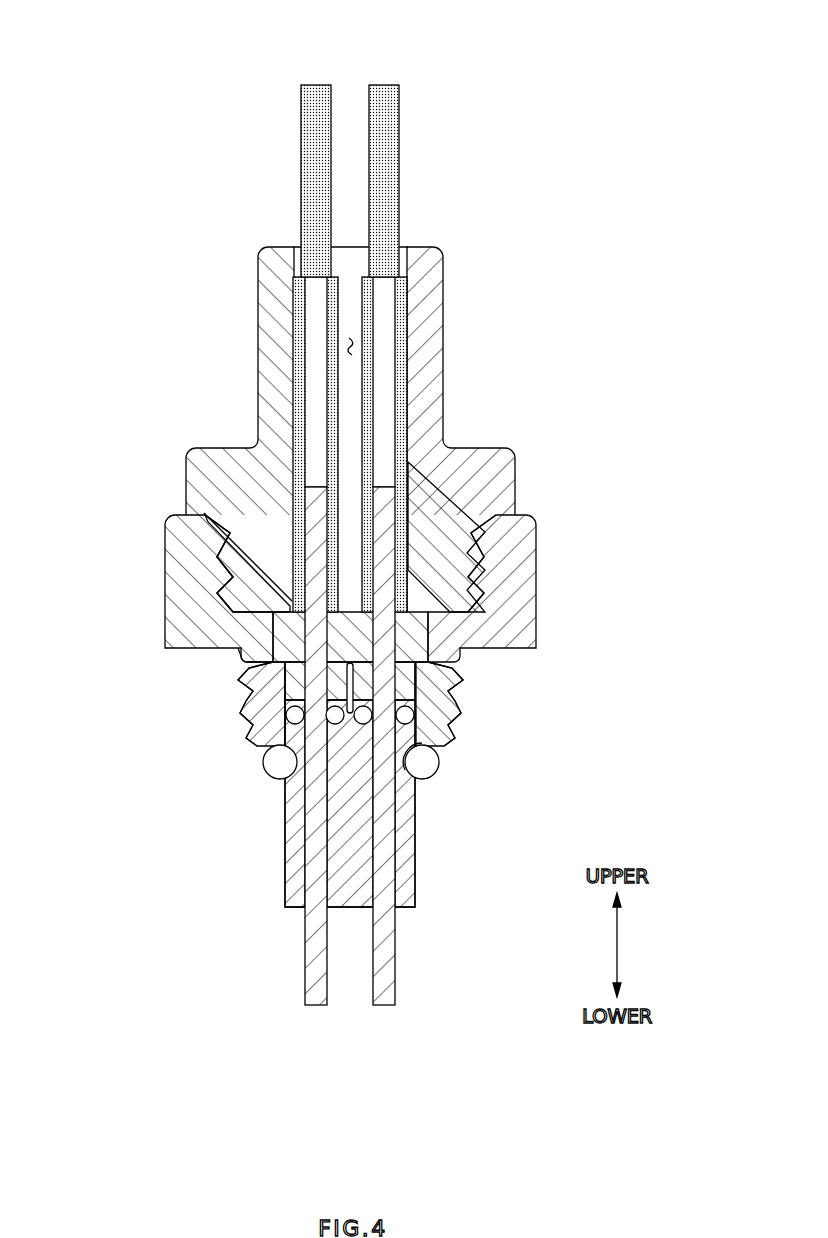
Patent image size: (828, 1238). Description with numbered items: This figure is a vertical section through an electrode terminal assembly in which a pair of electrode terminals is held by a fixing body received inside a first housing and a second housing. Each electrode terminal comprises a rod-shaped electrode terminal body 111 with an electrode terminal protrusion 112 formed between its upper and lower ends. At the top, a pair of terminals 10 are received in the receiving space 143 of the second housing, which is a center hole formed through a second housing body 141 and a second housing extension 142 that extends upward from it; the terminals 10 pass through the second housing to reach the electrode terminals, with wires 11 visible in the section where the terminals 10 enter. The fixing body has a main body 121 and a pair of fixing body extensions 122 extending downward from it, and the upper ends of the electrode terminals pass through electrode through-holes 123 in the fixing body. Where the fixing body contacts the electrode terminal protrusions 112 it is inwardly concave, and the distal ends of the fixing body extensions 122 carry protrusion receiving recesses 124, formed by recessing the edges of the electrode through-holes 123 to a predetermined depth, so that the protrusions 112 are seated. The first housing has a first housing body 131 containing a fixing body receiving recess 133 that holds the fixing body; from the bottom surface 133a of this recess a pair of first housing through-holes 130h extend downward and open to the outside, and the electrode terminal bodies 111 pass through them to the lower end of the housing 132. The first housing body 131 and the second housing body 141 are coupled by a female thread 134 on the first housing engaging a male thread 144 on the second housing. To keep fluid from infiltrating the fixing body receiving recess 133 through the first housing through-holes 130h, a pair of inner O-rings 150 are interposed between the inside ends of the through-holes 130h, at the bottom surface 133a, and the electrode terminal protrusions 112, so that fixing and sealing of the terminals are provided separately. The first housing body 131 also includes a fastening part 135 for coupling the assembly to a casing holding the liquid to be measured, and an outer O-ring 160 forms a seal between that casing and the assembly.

The terminals 10 is at (384, 84).
The electric wire 11 is at (300, 292).
The electrode terminal body 111 is at (385, 862).
The electrode terminal protrusion 112 is at (262, 692).
The main body 121 is at (282, 626).
The fixing body extension 122 is at (272, 660).
The electrode through-hole 123 is at (220, 526).
The protrusion receiving recess 124 is at (285, 713).
The first housing through-hole 130h is at (318, 832).
The first housing body 131 is at (445, 652).
The lower body portion 132 is at (414, 897).
The fixing body receiving recess 133 is at (480, 633).
The bottom surface 133a is at (428, 773).
The female thread 134 is at (486, 562).
The fastening part 135 is at (457, 732).
The second housing body 141 is at (495, 483).
The second housing extension 142 is at (422, 397).
The receiving space 143 is at (358, 345).
The male thread 144 is at (470, 532).
The inner O-ring 150 is at (268, 774).
The outer O-ring 160 is at (425, 785).